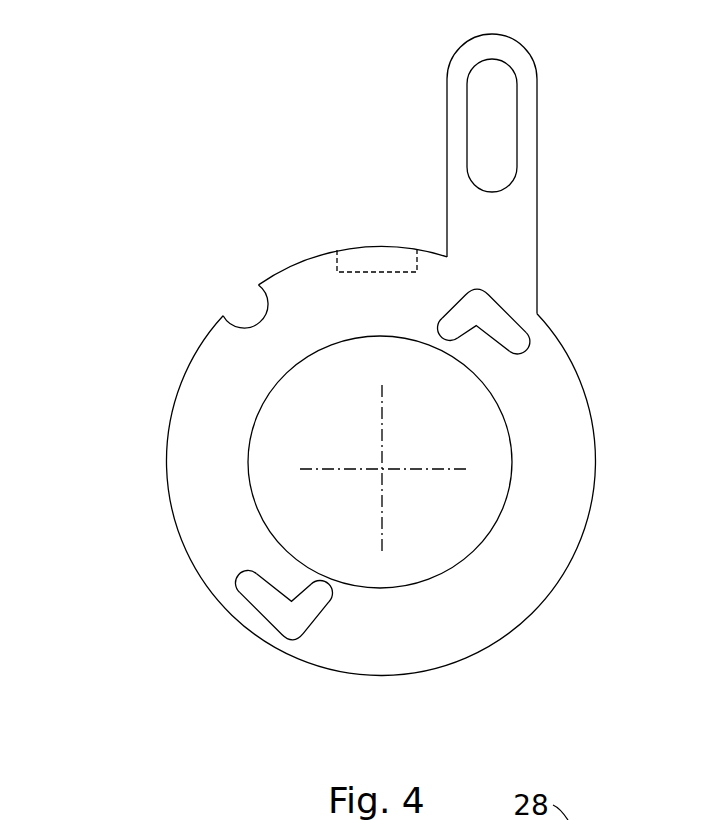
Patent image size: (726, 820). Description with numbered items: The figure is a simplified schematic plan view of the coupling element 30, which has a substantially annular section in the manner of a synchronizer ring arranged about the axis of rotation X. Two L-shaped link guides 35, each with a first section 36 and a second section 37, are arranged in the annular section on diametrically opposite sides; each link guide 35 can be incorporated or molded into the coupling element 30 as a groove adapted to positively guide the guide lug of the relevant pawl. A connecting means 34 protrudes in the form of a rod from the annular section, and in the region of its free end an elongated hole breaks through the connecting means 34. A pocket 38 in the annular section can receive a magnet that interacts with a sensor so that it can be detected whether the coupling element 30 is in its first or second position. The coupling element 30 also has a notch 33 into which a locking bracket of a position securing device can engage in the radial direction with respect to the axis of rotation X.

The coupling element 30 is at (170, 198).
The notch 33 is at (248, 307).
The connecting means 34 is at (458, 145).
The link guide 35 is at (492, 306).
The first section 36 is at (451, 318).
The second section 37 is at (516, 336).
The pocket 38 is at (368, 260).
The axis of rotation X is at (383, 468).